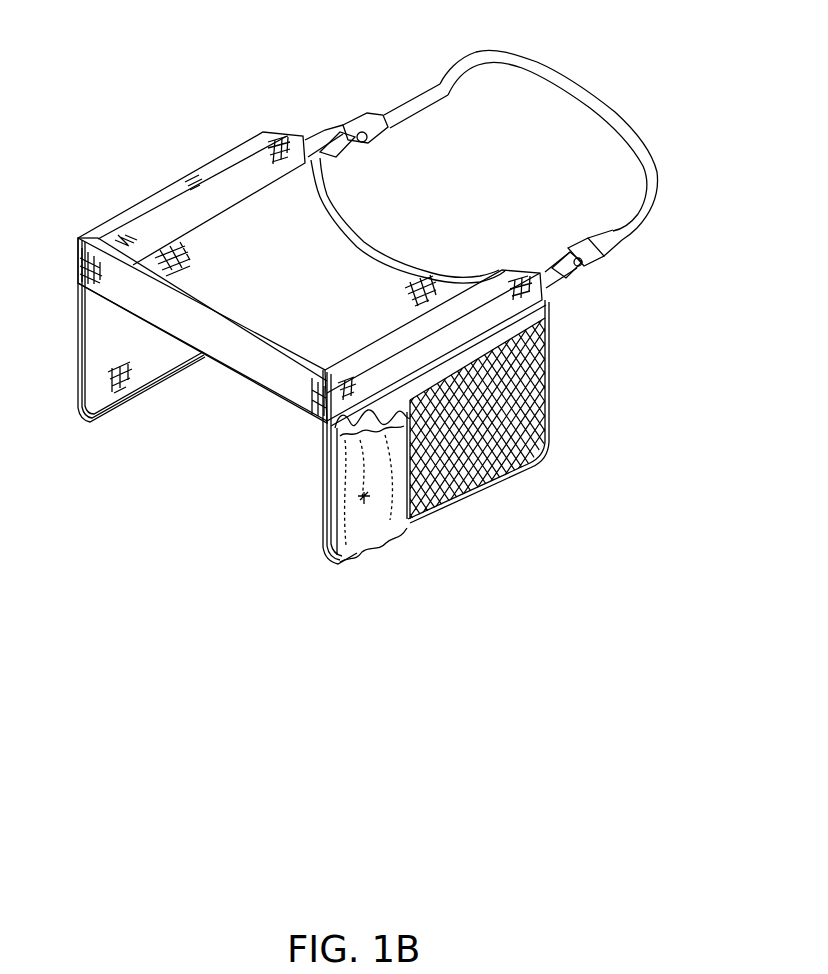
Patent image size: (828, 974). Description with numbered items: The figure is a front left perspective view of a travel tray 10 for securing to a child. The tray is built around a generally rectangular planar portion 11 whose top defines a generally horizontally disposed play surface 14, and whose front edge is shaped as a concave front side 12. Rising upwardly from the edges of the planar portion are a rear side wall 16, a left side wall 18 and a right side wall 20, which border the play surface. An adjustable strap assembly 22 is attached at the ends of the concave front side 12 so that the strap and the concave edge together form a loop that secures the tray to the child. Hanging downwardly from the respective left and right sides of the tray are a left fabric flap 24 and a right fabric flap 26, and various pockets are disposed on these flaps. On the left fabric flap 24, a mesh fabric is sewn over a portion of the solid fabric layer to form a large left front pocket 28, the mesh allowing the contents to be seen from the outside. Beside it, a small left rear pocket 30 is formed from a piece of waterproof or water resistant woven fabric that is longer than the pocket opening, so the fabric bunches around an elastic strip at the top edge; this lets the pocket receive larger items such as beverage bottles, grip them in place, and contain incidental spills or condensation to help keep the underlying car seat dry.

The travel tray 10 is at (103, 107).
The planar portion 11 is at (236, 270).
The concave front side 12 is at (358, 231).
The play surface 14 is at (355, 317).
The rear side wall 16 is at (220, 343).
The left side wall 18 is at (445, 357).
The right side wall 20 is at (226, 207).
The adjustable strap assembly 22 is at (627, 110).
The left fabric flap 24 is at (317, 479).
The right fabric flap 26 is at (72, 355).
The left front pocket 28 is at (507, 468).
The left rear pocket 30 is at (378, 515).